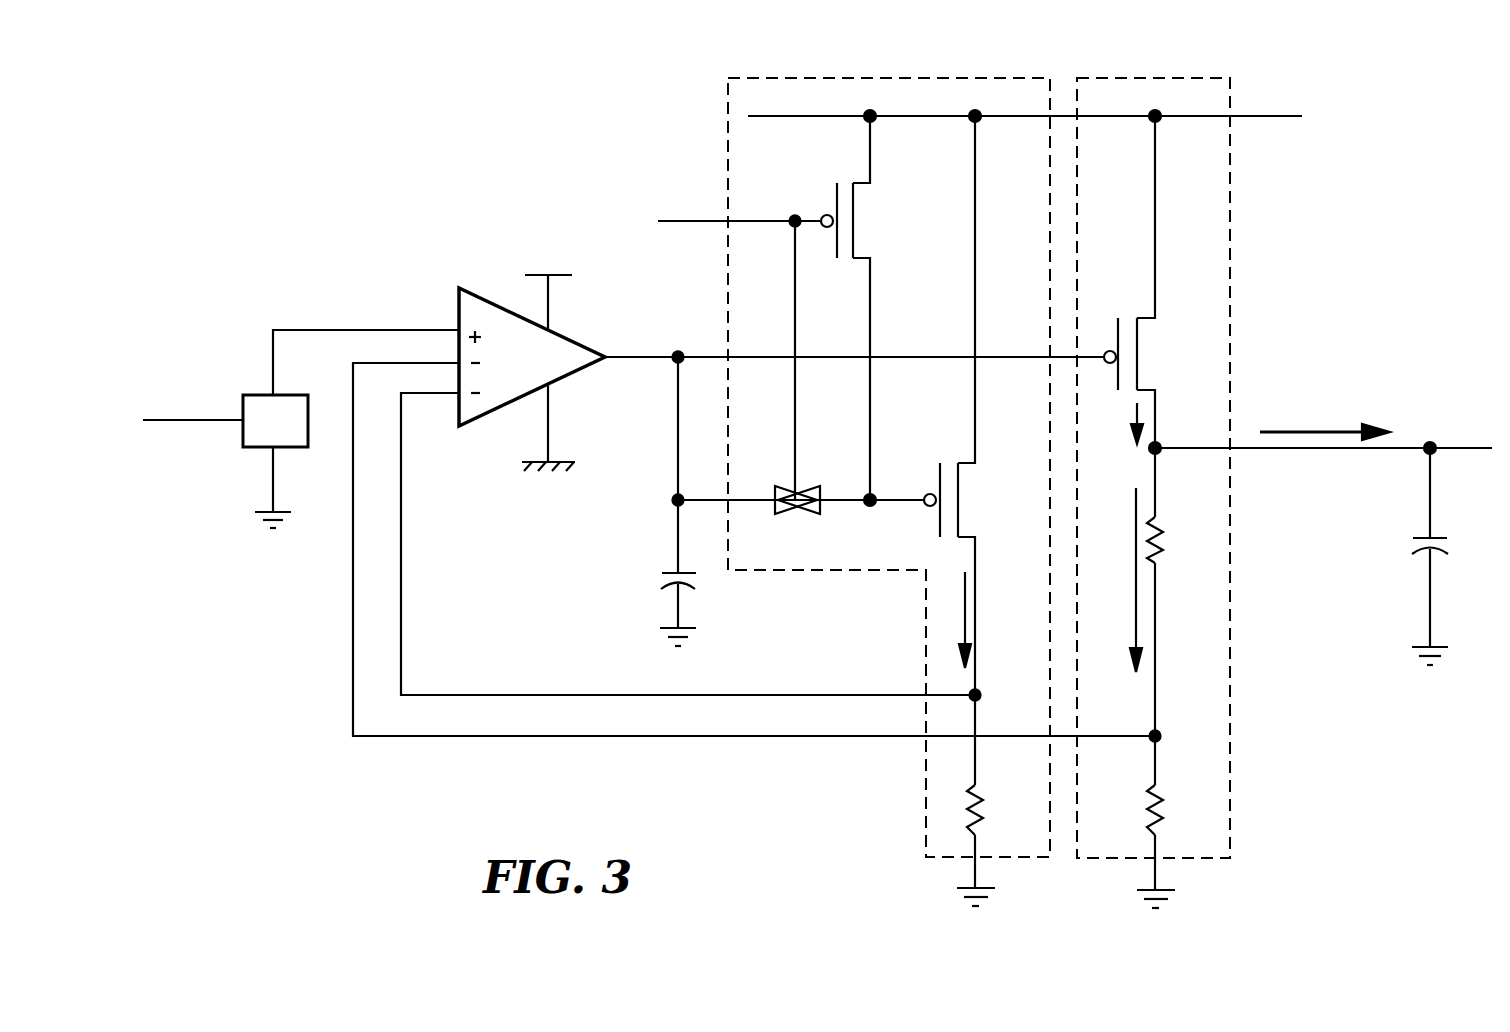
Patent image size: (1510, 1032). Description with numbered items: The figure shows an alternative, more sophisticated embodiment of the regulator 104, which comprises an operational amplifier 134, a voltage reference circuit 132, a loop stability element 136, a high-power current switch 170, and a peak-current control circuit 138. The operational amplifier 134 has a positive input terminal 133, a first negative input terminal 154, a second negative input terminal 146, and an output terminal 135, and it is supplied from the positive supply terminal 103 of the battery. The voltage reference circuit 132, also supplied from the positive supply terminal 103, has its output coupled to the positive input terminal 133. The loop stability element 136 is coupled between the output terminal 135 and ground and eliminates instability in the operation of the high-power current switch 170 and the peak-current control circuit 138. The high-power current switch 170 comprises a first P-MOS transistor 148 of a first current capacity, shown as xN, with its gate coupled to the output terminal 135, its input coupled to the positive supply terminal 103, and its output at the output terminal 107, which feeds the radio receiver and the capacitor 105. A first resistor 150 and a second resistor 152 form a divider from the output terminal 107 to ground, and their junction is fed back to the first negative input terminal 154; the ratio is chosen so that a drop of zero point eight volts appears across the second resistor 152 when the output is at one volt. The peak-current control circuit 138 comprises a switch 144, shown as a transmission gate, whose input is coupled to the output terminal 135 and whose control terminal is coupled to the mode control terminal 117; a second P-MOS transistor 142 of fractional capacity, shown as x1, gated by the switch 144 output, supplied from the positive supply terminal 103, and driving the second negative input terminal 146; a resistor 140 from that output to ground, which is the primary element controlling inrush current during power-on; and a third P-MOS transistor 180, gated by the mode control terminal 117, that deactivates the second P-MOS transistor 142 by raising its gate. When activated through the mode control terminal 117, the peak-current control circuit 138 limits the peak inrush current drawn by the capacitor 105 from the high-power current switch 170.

The positive supply terminal 103 is at (220, 422).
The regulator 104 is at (661, 850).
The capacitor 105 is at (1447, 543).
The output terminal 107 is at (1472, 445).
The mode control terminal 117 is at (693, 221).
The voltage reference circuit 132 is at (262, 393).
The positive input terminal 133 is at (435, 330).
The operational amplifier 134 is at (510, 308).
The output terminal 135 is at (633, 357).
The loop stability element 136 is at (668, 575).
The peak current control circuit 138 is at (927, 783).
The resistor 140 is at (990, 795).
The second P-MOS transistor 142 is at (960, 480).
The switch 144 is at (810, 513).
The second negative input terminal 146 is at (398, 490).
The first P-MOS transistor 148 is at (1147, 322).
The first resistor 150 is at (1160, 522).
The second resistor 152 is at (1170, 795).
The first negative input terminal 154 is at (348, 522).
The high-power current switch 170 is at (1233, 778).
The third P-MOS transistor 180 is at (866, 185).